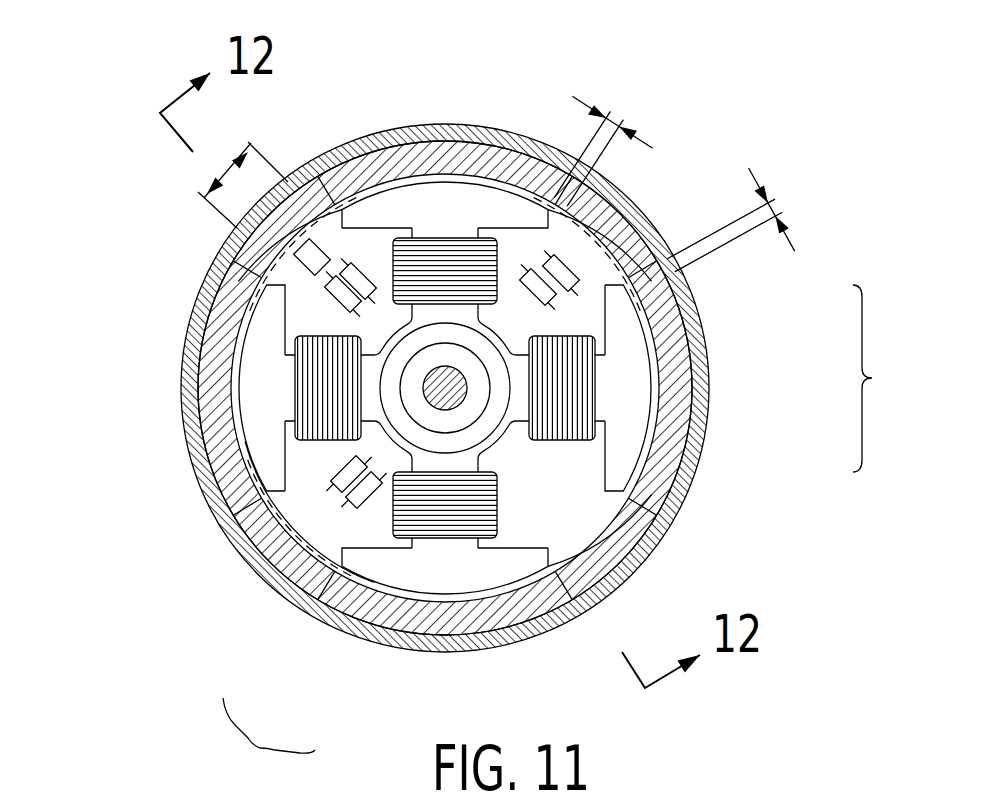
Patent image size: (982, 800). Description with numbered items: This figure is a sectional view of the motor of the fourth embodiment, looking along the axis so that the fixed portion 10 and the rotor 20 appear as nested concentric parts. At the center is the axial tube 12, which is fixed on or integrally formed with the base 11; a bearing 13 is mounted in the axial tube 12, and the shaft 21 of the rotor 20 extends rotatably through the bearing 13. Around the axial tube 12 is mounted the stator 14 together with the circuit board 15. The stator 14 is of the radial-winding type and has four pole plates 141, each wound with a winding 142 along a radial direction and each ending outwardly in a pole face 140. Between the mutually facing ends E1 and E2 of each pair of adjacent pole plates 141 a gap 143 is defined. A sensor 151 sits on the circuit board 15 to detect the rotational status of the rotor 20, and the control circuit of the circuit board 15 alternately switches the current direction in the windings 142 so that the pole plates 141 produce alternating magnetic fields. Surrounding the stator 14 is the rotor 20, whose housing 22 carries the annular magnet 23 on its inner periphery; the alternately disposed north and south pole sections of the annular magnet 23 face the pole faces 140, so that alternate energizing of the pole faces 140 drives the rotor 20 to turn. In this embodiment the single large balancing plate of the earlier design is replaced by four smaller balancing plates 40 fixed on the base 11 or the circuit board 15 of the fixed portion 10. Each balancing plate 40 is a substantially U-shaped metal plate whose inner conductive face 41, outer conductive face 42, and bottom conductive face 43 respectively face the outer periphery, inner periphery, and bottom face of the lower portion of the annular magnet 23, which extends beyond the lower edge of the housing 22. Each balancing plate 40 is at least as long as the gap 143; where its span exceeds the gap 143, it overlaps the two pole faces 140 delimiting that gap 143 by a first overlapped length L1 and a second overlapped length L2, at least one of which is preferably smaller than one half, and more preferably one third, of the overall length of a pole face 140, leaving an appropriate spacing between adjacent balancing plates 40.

The fixed portion 10 is at (880, 392).
The base 11 is at (652, 452).
The axial tube 12 is at (497, 403).
The bearing 13 is at (480, 378).
The stator 14 is at (528, 388).
The pole plate 141 is at (602, 346).
The winding 142 is at (580, 353).
The circuit board 15 is at (592, 313).
The pole face 140 is at (258, 455).
The gap 143 is at (202, 161).
The sensor 151 is at (296, 262).
The rotor 20 is at (401, 100).
The shaft 21 is at (437, 380).
The housing 22 is at (463, 128).
The annular magnet 23 is at (430, 150).
The balancing plate 40 is at (232, 782).
The inner conductive face 41 is at (349, 628).
The outer conductive face 42 is at (286, 599).
The bottom conductive face 43 is at (326, 611).
The first overlapped length L1 is at (742, 220).
The second overlapped length L2 is at (603, 145).
The end of pole plate E1 is at (636, 226).
The end of pole plate E2 is at (615, 205).